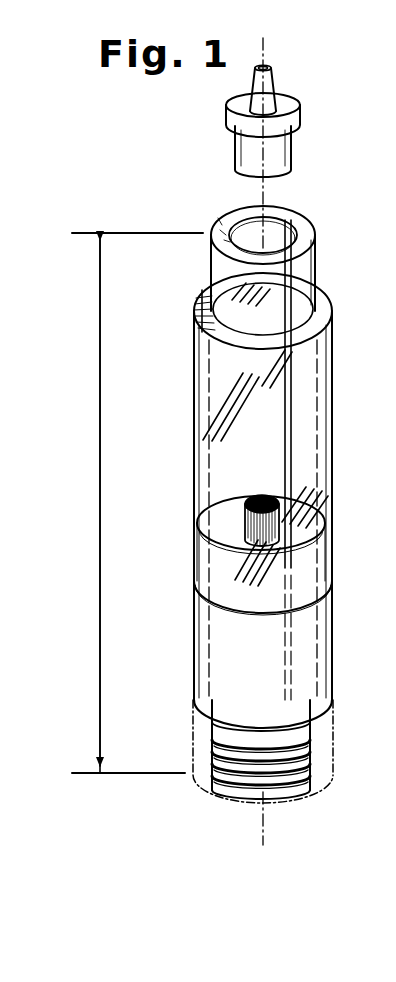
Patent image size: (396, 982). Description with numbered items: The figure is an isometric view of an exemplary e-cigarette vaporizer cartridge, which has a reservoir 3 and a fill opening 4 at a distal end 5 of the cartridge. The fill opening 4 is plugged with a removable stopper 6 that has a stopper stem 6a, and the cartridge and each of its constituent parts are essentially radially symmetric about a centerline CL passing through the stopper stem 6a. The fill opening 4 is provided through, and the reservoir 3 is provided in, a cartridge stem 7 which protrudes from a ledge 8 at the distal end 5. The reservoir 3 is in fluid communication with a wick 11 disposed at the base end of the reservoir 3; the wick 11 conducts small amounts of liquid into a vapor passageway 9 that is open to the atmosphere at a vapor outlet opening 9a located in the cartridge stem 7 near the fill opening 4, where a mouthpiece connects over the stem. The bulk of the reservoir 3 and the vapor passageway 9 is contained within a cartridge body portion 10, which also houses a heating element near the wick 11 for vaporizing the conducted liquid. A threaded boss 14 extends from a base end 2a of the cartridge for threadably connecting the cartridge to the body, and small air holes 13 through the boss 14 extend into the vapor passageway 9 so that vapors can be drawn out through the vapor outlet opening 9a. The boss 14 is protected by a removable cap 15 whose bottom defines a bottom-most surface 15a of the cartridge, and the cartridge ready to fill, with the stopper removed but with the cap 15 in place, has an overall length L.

The centerline CL is at (268, 44).
The base end 2a is at (295, 500).
The reservoir 3 is at (264, 424).
The fill opening 4 is at (256, 238).
The distal end 5 is at (241, 440).
The removable stopper 6 is at (256, 121).
The stopper stem 6a is at (267, 84).
The cartridge stem 7 is at (266, 440).
The ledge 8 is at (203, 297).
The vapor passageway 9 is at (308, 532).
The vapor outlet opening 9a is at (292, 240).
The cartridge body portion 10 is at (265, 496).
The wick 11 is at (246, 517).
The air holes 13 is at (269, 749).
The threaded boss 14 is at (316, 757).
The removable cap 15 is at (253, 752).
The bottom-most surface 15a is at (290, 801).
The overall length L is at (101, 554).